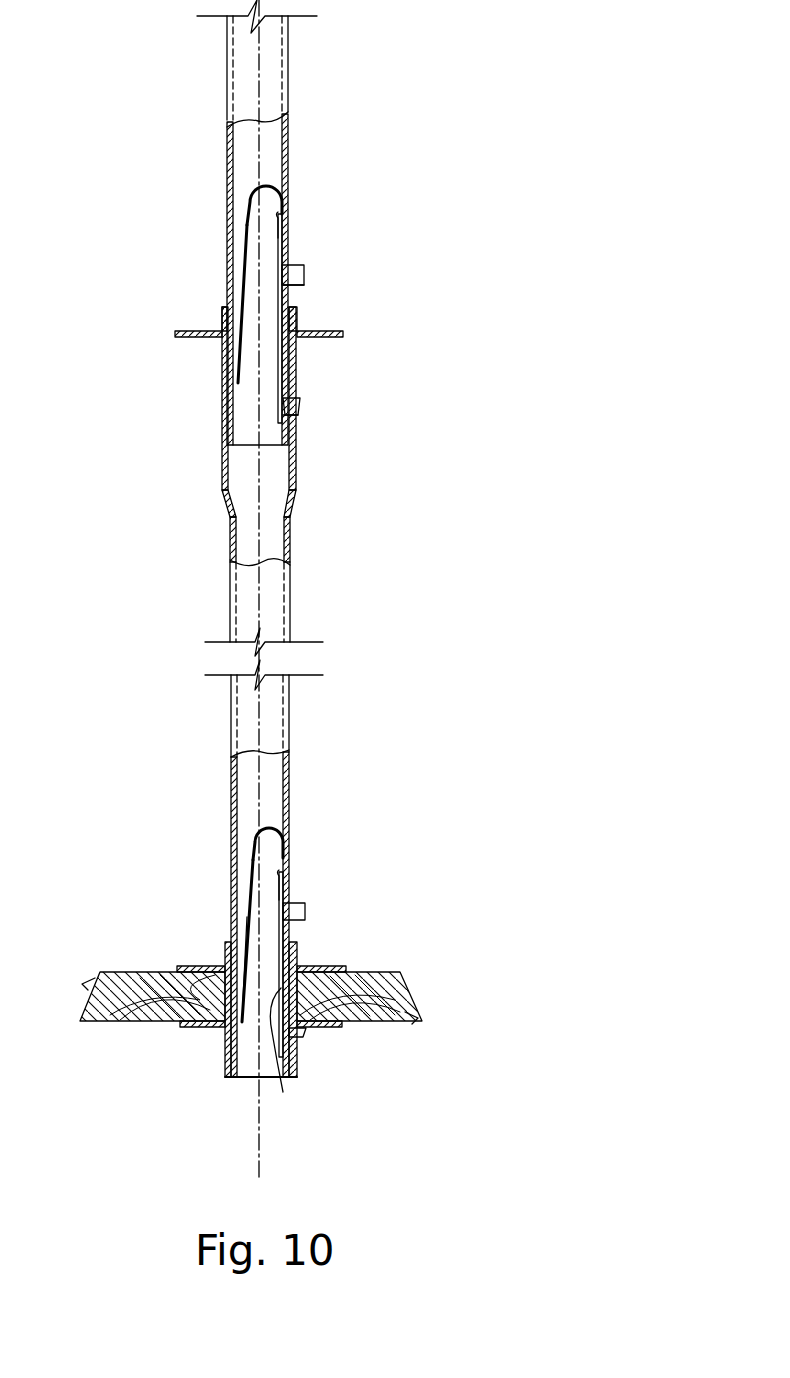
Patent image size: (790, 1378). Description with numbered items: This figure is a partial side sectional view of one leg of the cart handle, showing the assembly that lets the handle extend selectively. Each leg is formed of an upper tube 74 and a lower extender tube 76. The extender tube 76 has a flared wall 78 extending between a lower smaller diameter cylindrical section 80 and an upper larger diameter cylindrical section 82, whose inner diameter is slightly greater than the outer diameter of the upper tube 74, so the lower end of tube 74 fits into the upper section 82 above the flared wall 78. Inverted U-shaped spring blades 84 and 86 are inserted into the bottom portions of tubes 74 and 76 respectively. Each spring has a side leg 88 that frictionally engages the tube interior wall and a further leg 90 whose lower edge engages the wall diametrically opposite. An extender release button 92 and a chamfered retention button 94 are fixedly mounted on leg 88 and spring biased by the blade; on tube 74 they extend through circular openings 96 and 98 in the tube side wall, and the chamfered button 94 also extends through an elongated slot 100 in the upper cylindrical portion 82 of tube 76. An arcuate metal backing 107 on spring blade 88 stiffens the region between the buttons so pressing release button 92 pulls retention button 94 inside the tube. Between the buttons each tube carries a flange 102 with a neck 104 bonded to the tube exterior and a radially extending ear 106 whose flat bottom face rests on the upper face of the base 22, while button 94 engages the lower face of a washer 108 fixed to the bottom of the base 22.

The base 22 is at (107, 1000).
The upper tube 74 is at (289, 128).
The lower extender tube 76 is at (302, 626).
The flared wall 78 is at (296, 493).
The lower smaller diameter cylindrical section 80 is at (230, 598).
The upper larger diameter cylindrical section 82 is at (225, 415).
The spring blade 84 is at (236, 242).
The spring blade 86 is at (238, 876).
The side leg 88 is at (278, 214).
The further leg 90 is at (240, 292).
The extender release button 92 is at (301, 269).
The chamfered retention button 94 is at (301, 404).
The circular opening 96 is at (300, 286).
The circular opening 98 is at (298, 390).
The elongated slot 100 is at (298, 420).
The flange 102 is at (194, 343).
The neck 104 is at (298, 322).
The radially extending ear 106 is at (336, 338).
The arcuate metal backing 107 is at (277, 357).
The washer 108 is at (200, 1027).